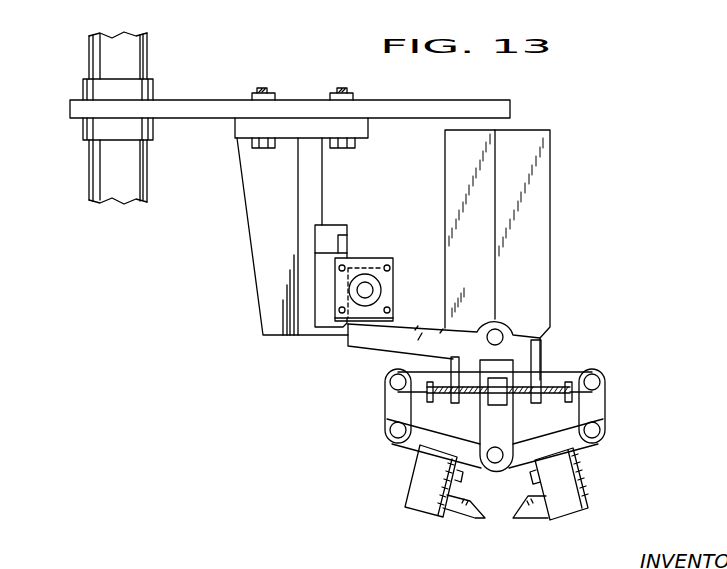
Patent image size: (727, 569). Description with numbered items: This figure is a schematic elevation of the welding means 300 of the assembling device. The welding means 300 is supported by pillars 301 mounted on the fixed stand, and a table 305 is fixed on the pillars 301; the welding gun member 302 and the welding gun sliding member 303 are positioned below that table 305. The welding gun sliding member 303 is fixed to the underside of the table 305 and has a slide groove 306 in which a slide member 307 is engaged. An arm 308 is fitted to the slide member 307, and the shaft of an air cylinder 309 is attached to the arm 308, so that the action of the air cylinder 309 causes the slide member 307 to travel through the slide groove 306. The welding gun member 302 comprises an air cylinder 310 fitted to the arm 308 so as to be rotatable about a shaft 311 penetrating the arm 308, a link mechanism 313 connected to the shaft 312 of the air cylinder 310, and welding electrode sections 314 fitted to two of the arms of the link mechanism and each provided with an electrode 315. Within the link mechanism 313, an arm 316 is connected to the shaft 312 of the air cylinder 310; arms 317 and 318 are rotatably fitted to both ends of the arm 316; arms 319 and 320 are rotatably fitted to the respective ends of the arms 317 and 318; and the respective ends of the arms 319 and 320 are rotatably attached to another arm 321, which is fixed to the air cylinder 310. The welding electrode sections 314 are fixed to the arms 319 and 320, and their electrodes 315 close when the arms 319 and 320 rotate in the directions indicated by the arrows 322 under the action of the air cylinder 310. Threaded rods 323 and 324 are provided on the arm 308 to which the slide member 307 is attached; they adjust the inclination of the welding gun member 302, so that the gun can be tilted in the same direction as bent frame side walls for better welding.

The welding means 300 is at (227, 189).
The pillar 301 is at (118, 47).
The welding gun member 302 is at (613, 323).
The welding gun sliding member 303 is at (215, 308).
The table 305 is at (210, 108).
The slide groove 306 is at (330, 252).
The slide member 307 is at (323, 322).
The arm 308 is at (417, 332).
The air cylinder 309 is at (382, 263).
The air cylinder 310 is at (545, 257).
The shaft 311 is at (497, 335).
The shaft 312 is at (497, 360).
The link mechanism 313 is at (658, 425).
The welding electrode section 314 is at (423, 508).
The electrode 315 is at (516, 520).
The arm 316 is at (582, 378).
The arm 317 is at (387, 412).
The arm 318 is at (605, 417).
The arm 319 is at (407, 440).
The arm 320 is at (590, 443).
The arm 321 is at (480, 420).
The arrow 322 is at (368, 498).
The threaded rod 323 is at (412, 370).
The threaded rod 324 is at (525, 404).